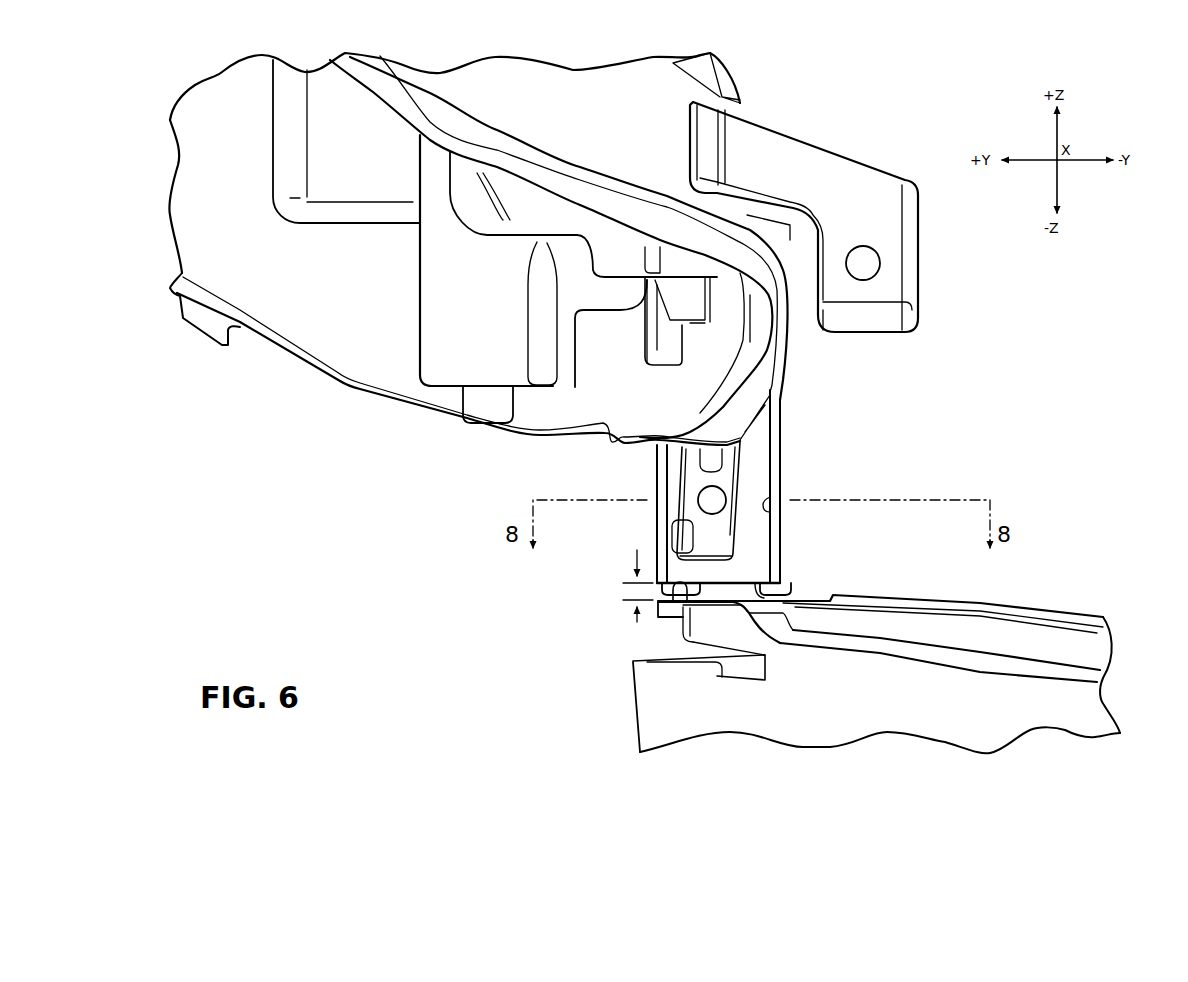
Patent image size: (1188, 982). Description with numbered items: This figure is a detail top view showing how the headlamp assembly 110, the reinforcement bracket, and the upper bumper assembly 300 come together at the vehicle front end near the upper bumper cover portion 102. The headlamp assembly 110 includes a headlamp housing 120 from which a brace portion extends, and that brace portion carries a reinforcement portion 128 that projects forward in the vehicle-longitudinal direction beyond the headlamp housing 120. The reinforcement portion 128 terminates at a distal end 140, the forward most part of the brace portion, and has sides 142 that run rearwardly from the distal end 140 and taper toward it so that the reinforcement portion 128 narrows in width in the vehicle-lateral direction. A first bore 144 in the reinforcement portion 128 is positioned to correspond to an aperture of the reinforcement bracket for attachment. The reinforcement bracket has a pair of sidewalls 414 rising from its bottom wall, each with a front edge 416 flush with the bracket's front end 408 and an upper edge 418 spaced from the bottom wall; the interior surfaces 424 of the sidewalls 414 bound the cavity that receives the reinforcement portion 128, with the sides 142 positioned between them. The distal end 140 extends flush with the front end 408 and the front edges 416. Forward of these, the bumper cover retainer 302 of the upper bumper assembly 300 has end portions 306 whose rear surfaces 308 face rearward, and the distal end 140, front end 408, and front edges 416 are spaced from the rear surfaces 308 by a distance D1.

The headlamp assembly 110 is at (471, 46).
The headlamp housing 120 is at (566, 87).
The reinforcement portion 128 is at (727, 473).
The distal end 140 is at (748, 603).
The sides 142 is at (787, 543).
The first bore 144 is at (698, 498).
The upper bumper assembly 300 is at (1122, 618).
The bumper cover retainer 302 is at (950, 600).
The end portions 306 is at (675, 604).
The rear surfaces 308 is at (685, 588).
The front end 408 is at (770, 596).
The sidewalls 414 is at (655, 475).
The front edge 416 is at (657, 597).
The upper edge 418 is at (655, 549).
The interior surfaces 424 is at (681, 525).
The upper bumper cover portion 102 is at (1078, 700).
The distance D1 is at (637, 560).